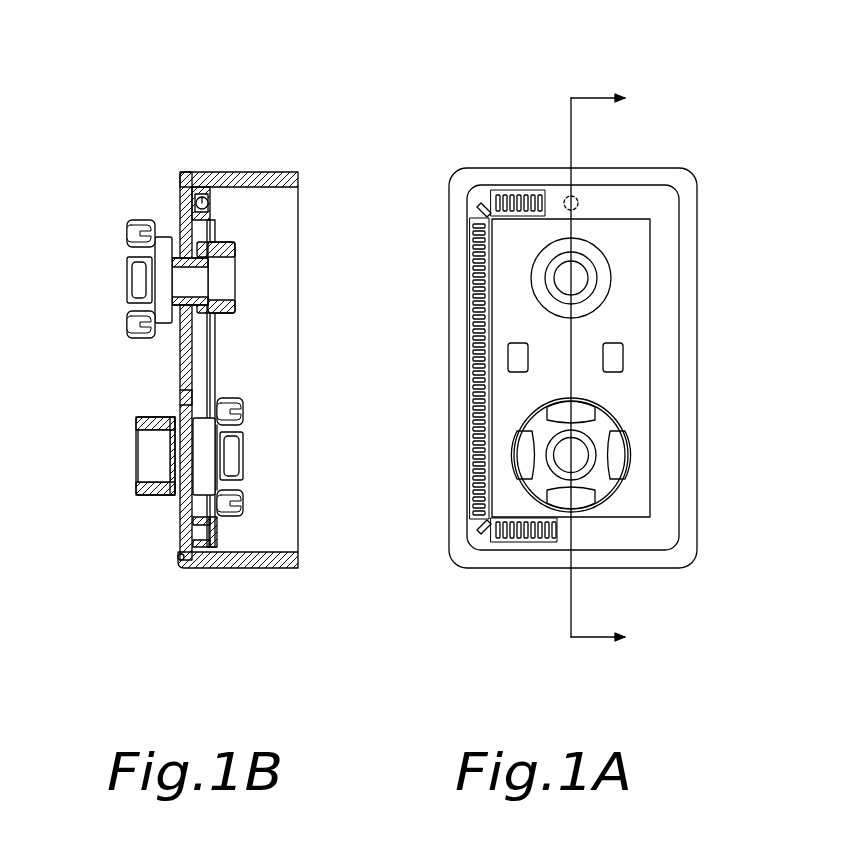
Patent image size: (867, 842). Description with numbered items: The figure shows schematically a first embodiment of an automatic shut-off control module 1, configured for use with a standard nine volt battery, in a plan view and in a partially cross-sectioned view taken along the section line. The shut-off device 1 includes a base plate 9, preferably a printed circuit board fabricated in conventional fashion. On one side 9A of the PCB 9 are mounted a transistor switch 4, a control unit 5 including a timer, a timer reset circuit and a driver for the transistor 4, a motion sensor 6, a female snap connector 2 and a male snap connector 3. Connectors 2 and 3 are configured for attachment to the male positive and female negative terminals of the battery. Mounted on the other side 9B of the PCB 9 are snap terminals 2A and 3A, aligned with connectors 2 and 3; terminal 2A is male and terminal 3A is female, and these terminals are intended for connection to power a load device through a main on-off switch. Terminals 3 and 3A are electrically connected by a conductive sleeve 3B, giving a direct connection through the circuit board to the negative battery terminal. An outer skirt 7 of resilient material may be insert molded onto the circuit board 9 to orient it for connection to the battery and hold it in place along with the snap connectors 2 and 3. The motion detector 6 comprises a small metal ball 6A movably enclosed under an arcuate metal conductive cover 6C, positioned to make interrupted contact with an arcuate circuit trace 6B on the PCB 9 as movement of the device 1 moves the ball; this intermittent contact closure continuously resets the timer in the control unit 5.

In FIG. 1A, the automatic shut-off control module 1 is at (838, 310).
In FIG. 1B, the female snap connector 2 is at (243, 458).
In FIG. 1A, the female snap connector 2 is at (625, 452).
In FIG. 1B, the snap terminal 2A is at (136, 488).
In FIG. 1B, the male snap connector 3 is at (228, 240).
In FIG. 1A, the male snap connector 3 is at (578, 278).
In FIG. 1B, the snap terminal 3A is at (127, 235).
In FIG. 1B, the conductive sleeve 3B is at (172, 287).
In FIG. 1A, the transistor switch 4 is at (615, 352).
In FIG. 1A, the control unit 5 is at (518, 360).
In FIG. 1B, the motion sensor 6 is at (178, 178).
In FIG. 1A, the motion sensor 6 is at (627, 173).
In FIG. 1B, the metal ball 6A is at (207, 183).
In FIG. 1A, the metal ball 6A is at (577, 200).
In FIG. 1B, the arcuate circuit trace 6B is at (190, 207).
In FIG. 1A, the arcuate circuit trace 6B is at (515, 197).
In FIG. 1A, the arcuate metal conductive cover 6C is at (658, 208).
In FIG. 1B, the outer skirt 7 is at (233, 562).
In FIG. 1B, the base plate 9 is at (185, 378).
In FIG. 1A, the base plate 9 is at (630, 408).
In FIG. 1B, the one side of PCB 9A is at (192, 367).
In FIG. 1A, the one side of PCB 9A is at (518, 295).
In FIG. 1B, the other side of PCB 9B is at (182, 397).